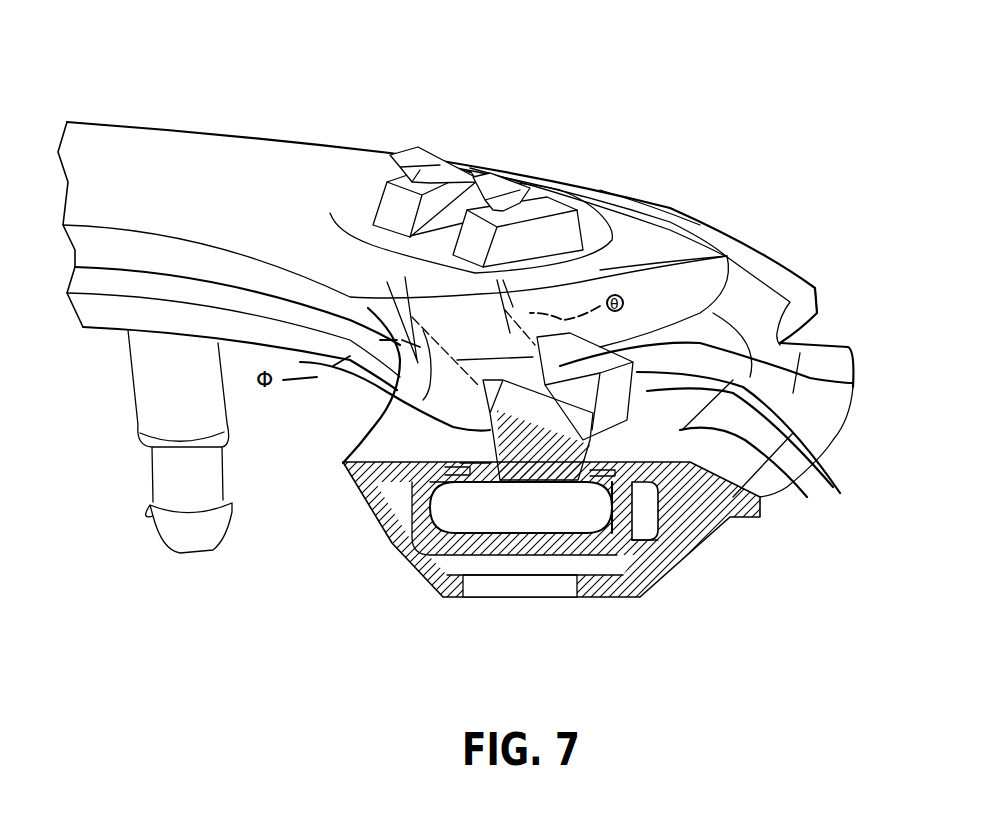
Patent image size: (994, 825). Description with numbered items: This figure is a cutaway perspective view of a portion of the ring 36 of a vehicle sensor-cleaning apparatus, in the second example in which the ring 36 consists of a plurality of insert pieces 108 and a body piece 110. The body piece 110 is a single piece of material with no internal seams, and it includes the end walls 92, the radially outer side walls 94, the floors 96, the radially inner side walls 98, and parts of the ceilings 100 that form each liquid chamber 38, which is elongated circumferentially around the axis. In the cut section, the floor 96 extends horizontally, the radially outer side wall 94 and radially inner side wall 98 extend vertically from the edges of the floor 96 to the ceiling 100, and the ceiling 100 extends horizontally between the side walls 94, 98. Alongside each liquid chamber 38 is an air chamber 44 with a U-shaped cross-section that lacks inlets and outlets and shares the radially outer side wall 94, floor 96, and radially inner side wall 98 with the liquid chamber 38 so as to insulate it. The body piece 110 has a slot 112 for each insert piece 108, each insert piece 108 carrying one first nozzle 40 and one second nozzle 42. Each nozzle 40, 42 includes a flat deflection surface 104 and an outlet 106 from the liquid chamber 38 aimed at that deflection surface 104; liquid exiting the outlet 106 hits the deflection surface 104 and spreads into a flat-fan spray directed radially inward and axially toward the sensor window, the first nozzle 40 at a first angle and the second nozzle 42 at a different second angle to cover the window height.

The ring 36 is at (592, 102).
The liquid chamber 38 is at (232, 182).
The first nozzle 40 is at (412, 152).
The second nozzle 42 is at (513, 200).
The air chamber 44 is at (640, 550).
The end wall 92 is at (663, 290).
The radially outer side wall 94 is at (637, 550).
The floor 96 is at (510, 545).
The radially inner side wall 98 is at (443, 523).
The ceiling 100 is at (577, 490).
The deflection surface 104 is at (400, 395).
The outlet 106 is at (460, 463).
The insert piece 108 is at (592, 240).
The body piece 110 is at (780, 255).
The slot 112 is at (430, 482).